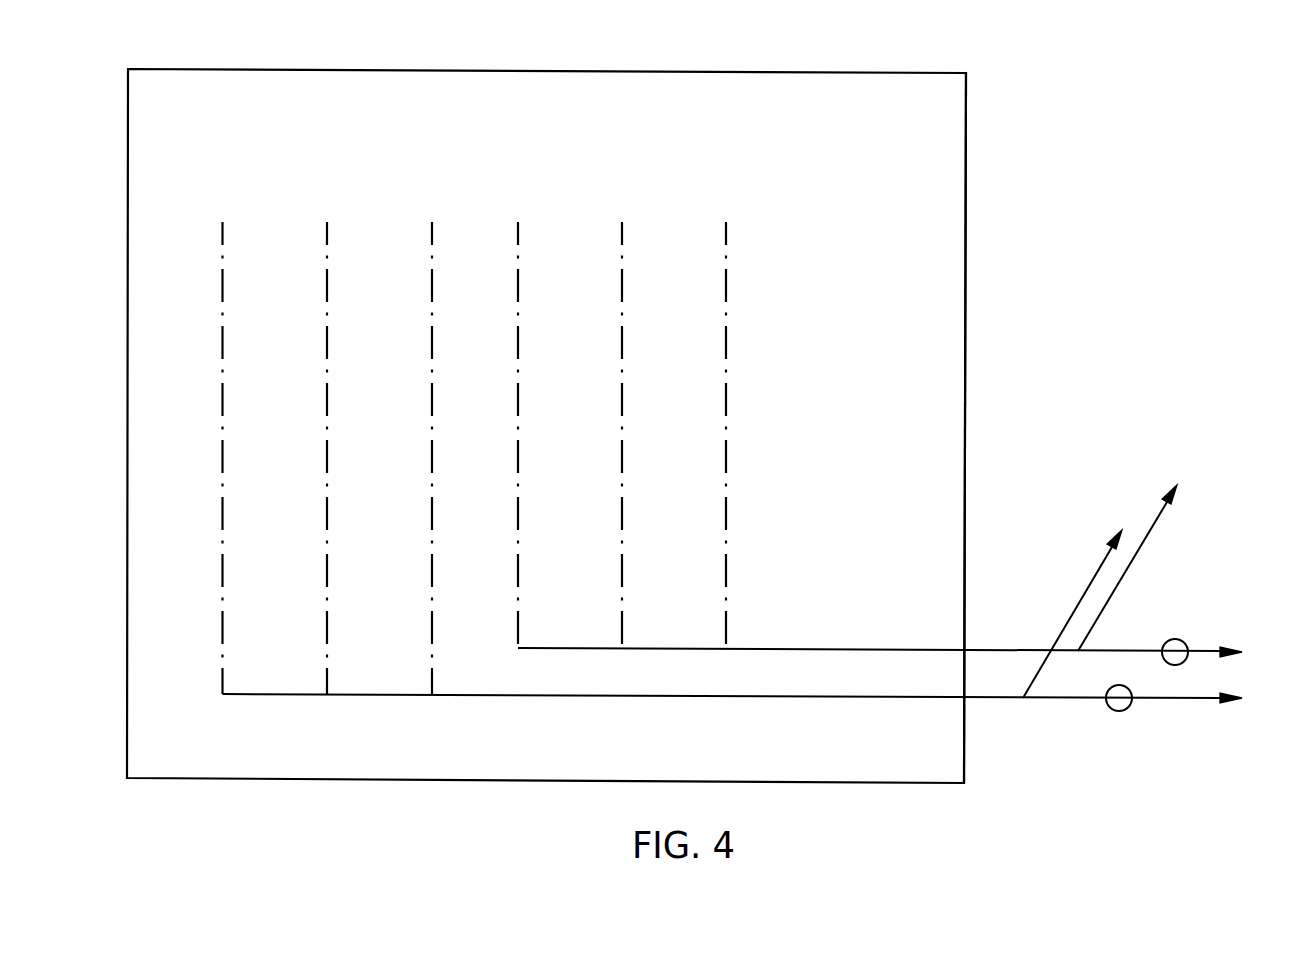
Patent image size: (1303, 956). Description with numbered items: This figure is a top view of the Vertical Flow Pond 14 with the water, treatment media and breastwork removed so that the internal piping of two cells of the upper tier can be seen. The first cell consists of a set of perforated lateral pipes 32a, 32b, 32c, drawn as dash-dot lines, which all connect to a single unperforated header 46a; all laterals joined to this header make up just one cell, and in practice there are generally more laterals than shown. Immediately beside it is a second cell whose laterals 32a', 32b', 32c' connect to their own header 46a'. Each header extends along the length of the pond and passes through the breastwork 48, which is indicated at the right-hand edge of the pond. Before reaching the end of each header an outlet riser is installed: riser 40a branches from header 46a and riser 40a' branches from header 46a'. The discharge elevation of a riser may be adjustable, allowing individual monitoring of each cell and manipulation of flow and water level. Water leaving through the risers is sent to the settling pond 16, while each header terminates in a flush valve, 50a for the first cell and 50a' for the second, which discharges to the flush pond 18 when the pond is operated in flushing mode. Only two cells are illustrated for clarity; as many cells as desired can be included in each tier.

The Vertical Flow Pond 14 is at (752, 53).
The settling pond 16 is at (1154, 501).
The flush pond 18 is at (1248, 678).
The perforated lateral pipe 32a is at (184, 458).
The perforated lateral pipe 32b is at (288, 458).
The perforated lateral pipe 32c is at (393, 458).
The perforated lateral pipe 32a' is at (480, 435).
The perforated lateral pipe 32b' is at (583, 435).
The perforated lateral pipe 32c' is at (688, 435).
The outlet riser 40a is at (1067, 622).
The outlet riser 40a' is at (1160, 576).
The header 46a is at (723, 735).
The header 46a' is at (870, 614).
The breastwork 48 is at (948, 431).
The flush valve 50a is at (1124, 713).
The flush valve 50a' is at (1184, 640).